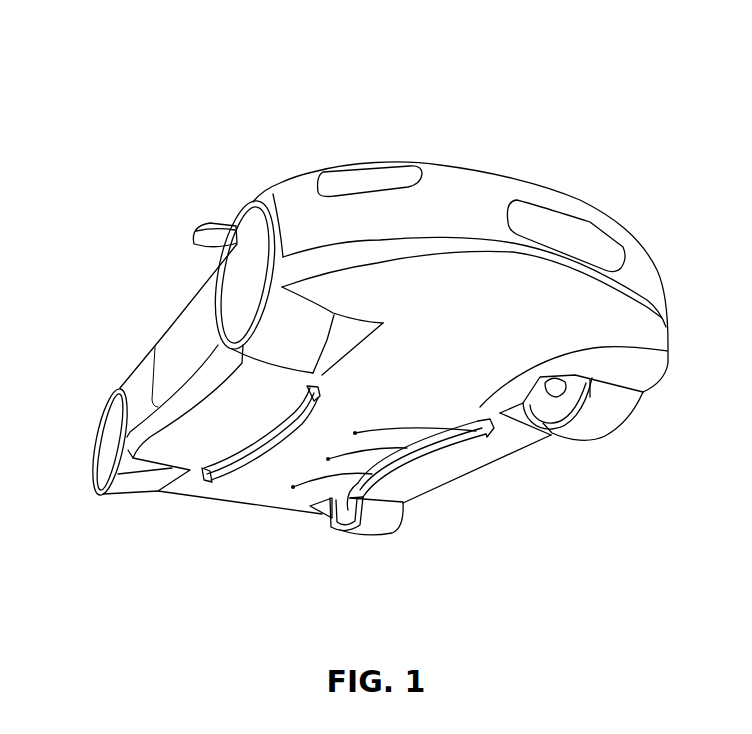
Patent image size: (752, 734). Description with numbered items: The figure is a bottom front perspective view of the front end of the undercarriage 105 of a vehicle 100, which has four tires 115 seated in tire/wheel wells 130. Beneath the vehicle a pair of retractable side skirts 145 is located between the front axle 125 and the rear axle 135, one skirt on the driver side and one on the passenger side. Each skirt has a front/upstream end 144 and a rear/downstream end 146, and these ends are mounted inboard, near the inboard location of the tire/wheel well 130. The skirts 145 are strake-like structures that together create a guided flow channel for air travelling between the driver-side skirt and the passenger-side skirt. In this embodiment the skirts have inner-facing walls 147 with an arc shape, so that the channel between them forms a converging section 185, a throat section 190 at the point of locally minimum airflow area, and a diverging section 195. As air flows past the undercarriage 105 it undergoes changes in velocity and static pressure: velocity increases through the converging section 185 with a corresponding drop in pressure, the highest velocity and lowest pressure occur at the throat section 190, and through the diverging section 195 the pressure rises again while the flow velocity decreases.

The vehicle 100 is at (256, 94).
The undercarriage 105 is at (295, 500).
The tires 115 is at (280, 310).
The front axle 125 is at (563, 390).
The tire/wheel well 130 is at (253, 208).
The rear axle 135 is at (343, 503).
The front/upstream end 144 is at (293, 417).
The side skirts 145 is at (268, 455).
The rear/downstream ends 146 is at (167, 490).
The inner-facing walls 147 is at (667, 351).
The converging section 185 is at (470, 435).
The throat section 190 is at (418, 450).
The diverging section 195 is at (378, 482).